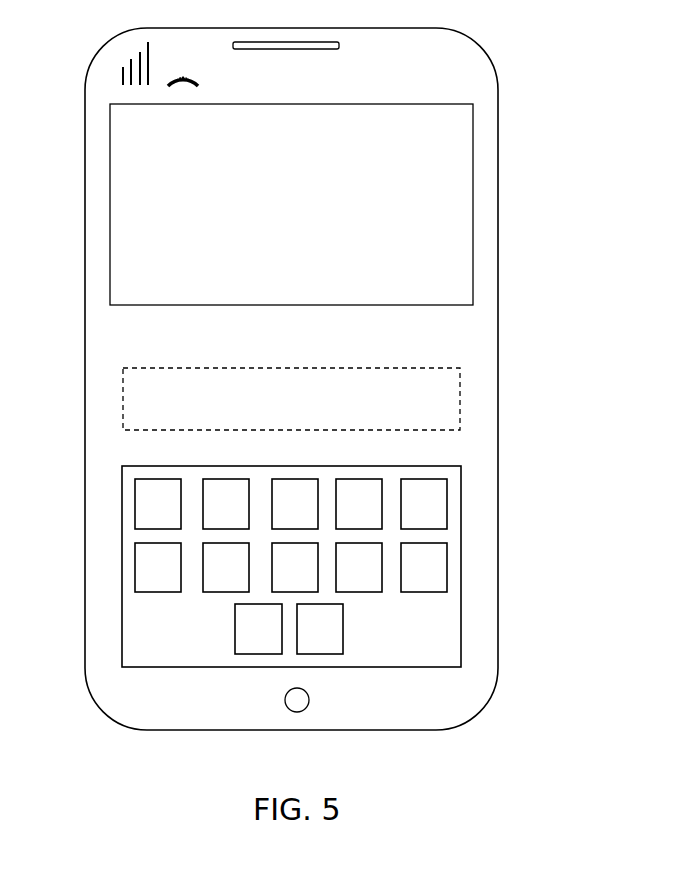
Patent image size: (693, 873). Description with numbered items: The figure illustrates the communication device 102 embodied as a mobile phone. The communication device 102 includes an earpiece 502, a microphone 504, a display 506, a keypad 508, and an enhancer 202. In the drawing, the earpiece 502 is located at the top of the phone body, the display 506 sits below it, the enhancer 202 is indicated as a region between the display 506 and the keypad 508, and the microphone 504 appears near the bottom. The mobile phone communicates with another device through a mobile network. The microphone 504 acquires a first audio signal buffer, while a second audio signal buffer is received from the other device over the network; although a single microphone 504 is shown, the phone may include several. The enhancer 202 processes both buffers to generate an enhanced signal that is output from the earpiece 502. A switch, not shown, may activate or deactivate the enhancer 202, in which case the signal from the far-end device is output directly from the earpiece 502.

The communication device 102 is at (498, 379).
The earpiece 502 is at (339, 45).
The microphone 504 is at (309, 700).
The display 506 is at (271, 248).
The keypad 508 is at (461, 567).
The enhancer 202 is at (312, 411).